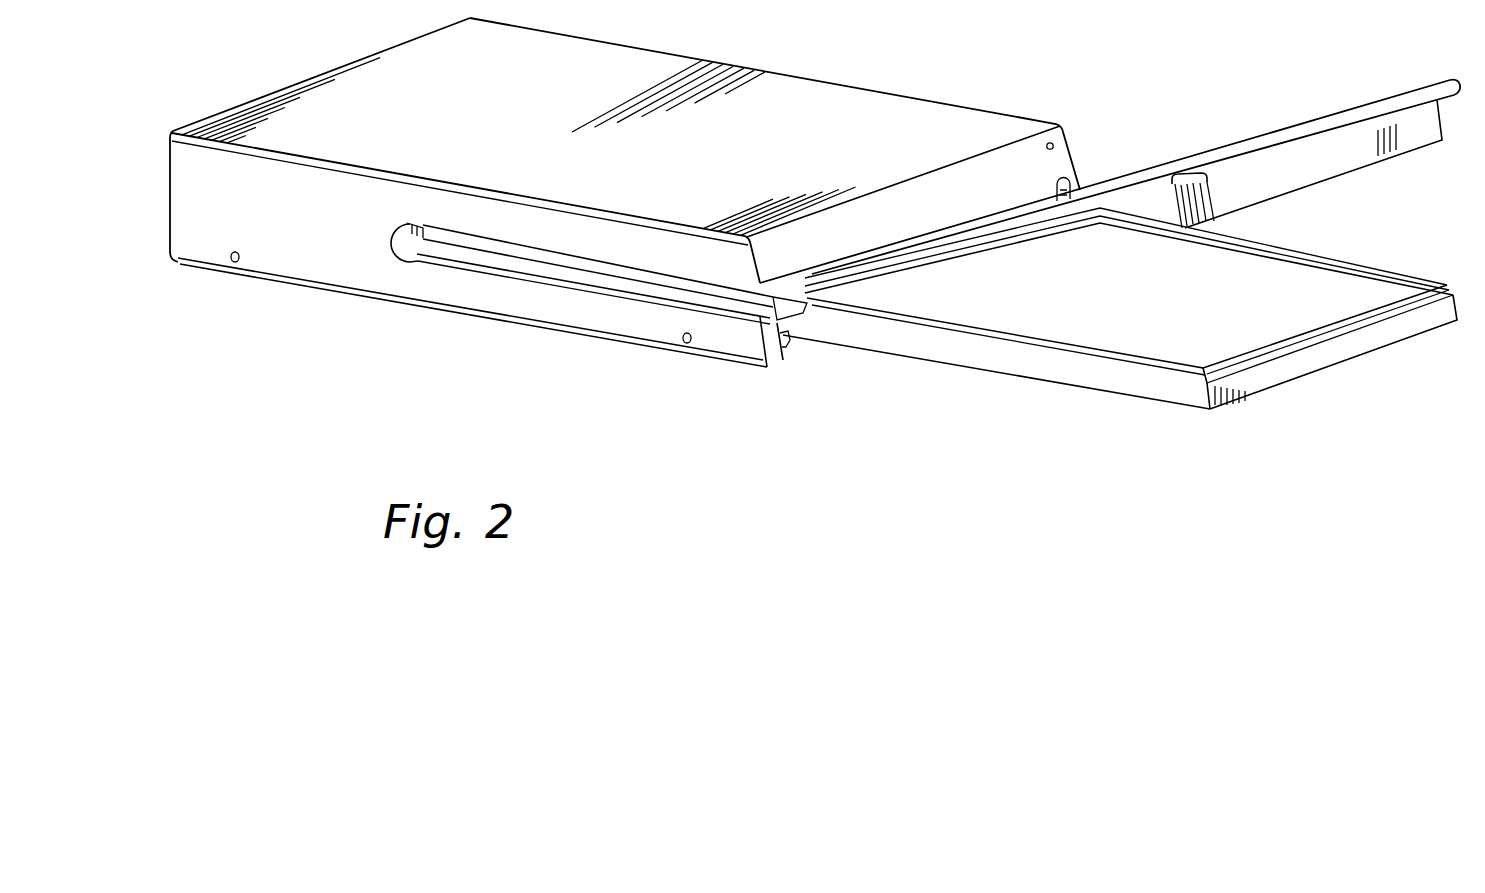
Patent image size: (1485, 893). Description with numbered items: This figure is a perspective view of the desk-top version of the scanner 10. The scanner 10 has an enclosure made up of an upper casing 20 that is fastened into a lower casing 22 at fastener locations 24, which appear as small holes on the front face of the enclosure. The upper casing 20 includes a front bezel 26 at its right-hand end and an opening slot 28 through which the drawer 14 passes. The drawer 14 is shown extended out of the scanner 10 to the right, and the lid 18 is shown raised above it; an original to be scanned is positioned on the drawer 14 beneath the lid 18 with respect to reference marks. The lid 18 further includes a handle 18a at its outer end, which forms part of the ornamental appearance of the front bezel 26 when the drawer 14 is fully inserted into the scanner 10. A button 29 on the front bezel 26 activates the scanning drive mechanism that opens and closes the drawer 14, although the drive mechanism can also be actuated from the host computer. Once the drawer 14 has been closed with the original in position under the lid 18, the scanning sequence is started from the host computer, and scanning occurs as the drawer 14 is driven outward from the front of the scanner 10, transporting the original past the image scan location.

The scanner 10 is at (1072, 80).
The drawer 14 is at (1070, 372).
The lid 18 is at (1150, 172).
The handle 18a is at (1418, 132).
The upper casing 20 is at (625, 150).
The lower casing 22 is at (740, 367).
The fastener locations 24 is at (235, 263).
The front bezel 26 is at (1057, 156).
The opening slot 28 is at (786, 350).
The button 29 is at (1072, 184).